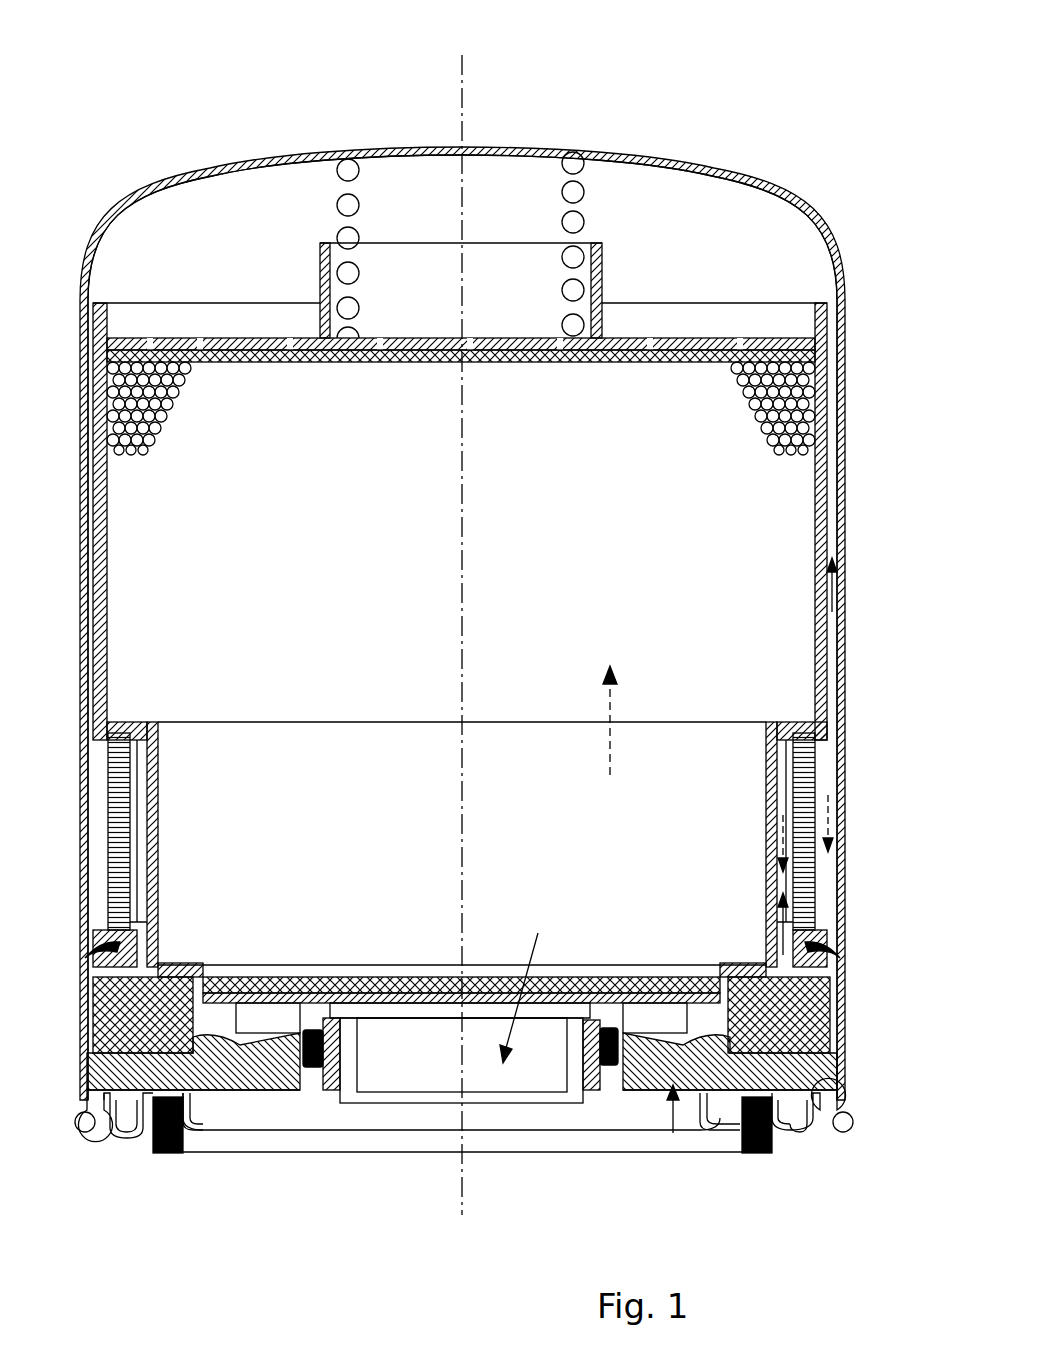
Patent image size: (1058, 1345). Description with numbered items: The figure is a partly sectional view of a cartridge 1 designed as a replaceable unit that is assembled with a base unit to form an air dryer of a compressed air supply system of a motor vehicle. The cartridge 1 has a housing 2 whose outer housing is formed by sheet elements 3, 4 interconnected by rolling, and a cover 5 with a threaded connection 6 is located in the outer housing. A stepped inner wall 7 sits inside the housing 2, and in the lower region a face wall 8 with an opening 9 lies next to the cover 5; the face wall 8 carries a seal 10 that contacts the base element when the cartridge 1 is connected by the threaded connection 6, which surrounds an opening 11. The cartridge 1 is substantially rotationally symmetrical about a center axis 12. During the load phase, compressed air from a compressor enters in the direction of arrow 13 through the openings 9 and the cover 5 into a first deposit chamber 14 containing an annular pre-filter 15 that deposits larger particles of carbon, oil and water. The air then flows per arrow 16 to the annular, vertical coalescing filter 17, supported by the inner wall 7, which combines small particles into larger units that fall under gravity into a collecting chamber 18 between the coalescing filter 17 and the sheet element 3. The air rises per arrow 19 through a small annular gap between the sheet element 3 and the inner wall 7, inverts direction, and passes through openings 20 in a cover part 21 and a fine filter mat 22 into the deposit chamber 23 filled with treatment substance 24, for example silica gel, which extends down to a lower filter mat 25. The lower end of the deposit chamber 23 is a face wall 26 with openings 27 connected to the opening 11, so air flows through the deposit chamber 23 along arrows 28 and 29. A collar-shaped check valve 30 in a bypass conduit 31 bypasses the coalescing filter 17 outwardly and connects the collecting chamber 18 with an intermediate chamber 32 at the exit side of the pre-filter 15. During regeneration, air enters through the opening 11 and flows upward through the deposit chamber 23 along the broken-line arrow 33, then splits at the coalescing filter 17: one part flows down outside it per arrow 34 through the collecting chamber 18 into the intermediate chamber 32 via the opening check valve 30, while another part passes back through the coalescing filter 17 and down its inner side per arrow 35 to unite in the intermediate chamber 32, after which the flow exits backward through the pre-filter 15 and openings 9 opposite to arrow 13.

The cartridge 1 is at (212, 232).
The housing 2 is at (722, 178).
The sheet element 3 is at (777, 212).
The sheet element 4 is at (797, 1120).
The cover 5 is at (790, 1070).
The threaded connection 6 is at (560, 1058).
The inner wall 7 is at (820, 517).
The face wall 8 is at (693, 1110).
The opening 9 is at (637, 1093).
The seal 10 is at (762, 1150).
The opening 11 is at (453, 1072).
The center axis 12 is at (463, 482).
The arrow 13 is at (660, 1148).
The first deposit chamber 14 is at (775, 1028).
The pre-filter 15 is at (845, 992).
The arrow 16 is at (837, 945).
The coalescing filter 17 is at (828, 848).
The collecting chamber 18 is at (822, 912).
The arrow 19 is at (840, 577).
The openings 20 is at (770, 338).
The cover part 21 is at (800, 343).
The filter mat 22 is at (773, 352).
The deposit chamber 23 is at (687, 453).
The treatment substance 24 is at (773, 384).
The lower filter mat 25 is at (645, 918).
The face wall 26 is at (533, 950).
The openings 27 is at (478, 1000).
The arrow 28 is at (694, 392).
The arrow 29 is at (462, 992).
The check valve 30 is at (860, 950).
The bypass conduit 31 is at (843, 953).
The intermediate chamber 32 is at (833, 1027).
The arrow 33 is at (618, 690).
The arrow 34 is at (795, 815).
The arrow 35 is at (778, 760).